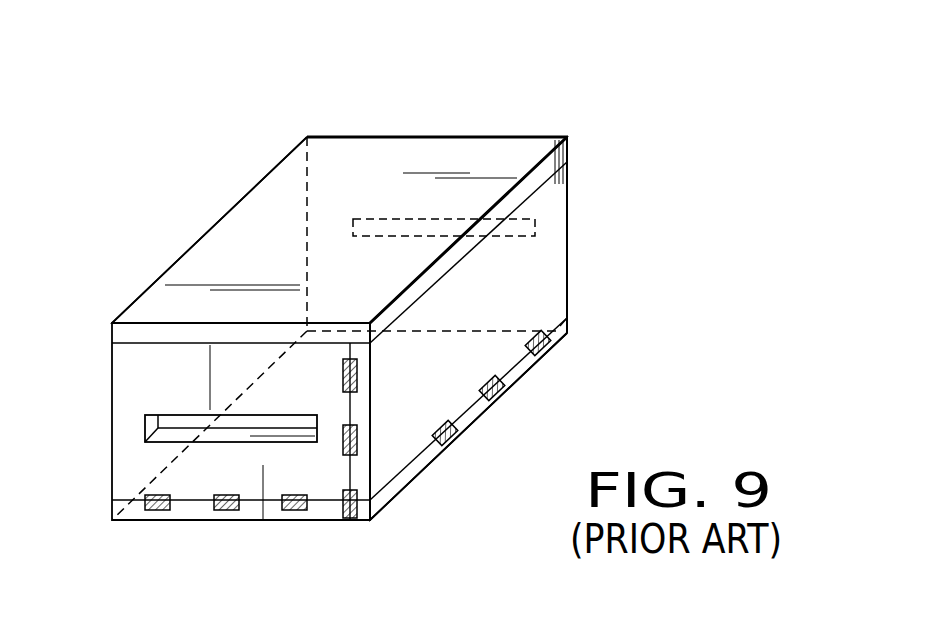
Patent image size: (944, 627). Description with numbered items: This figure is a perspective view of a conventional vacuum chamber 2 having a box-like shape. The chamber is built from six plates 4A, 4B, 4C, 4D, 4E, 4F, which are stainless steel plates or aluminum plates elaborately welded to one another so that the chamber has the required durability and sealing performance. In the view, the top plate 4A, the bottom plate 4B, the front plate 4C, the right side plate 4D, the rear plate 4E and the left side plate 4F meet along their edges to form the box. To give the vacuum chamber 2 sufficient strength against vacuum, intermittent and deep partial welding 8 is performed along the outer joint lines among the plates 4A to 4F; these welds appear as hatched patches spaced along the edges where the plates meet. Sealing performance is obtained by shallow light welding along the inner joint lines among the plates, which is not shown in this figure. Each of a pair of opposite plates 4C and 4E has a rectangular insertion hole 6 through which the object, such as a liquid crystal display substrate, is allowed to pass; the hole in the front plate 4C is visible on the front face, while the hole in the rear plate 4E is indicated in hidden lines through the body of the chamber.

The vacuum chamber 2 is at (580, 149).
The plate 4A is at (447, 150).
The plate 4B is at (337, 527).
The plate 4C is at (128, 393).
The plate 4D is at (553, 283).
The plate 4E is at (575, 190).
The plate 4F is at (118, 304).
The rectangular insertion hole 6 is at (535, 230).
The intermittent and deep partial welding 8 is at (545, 355).